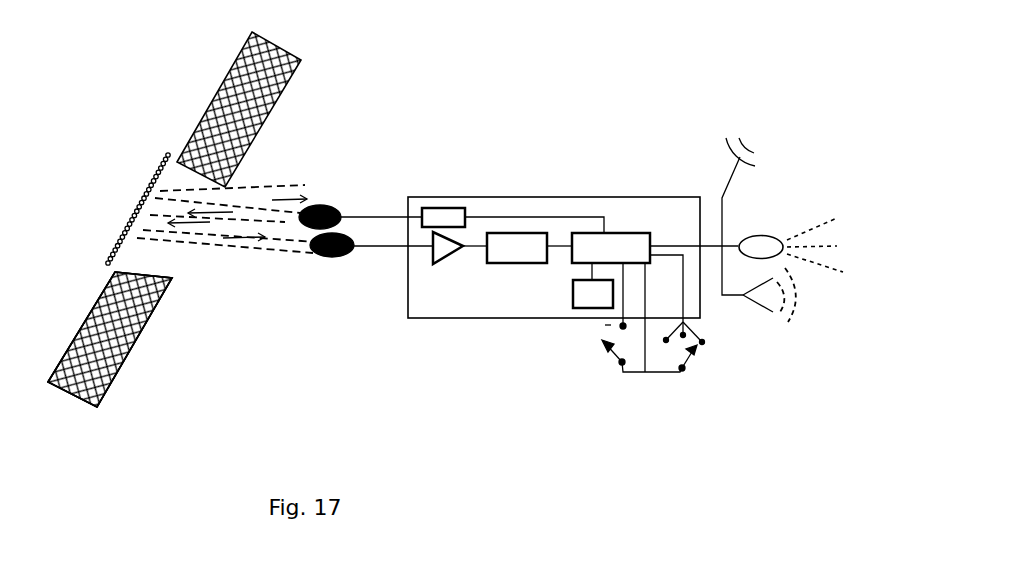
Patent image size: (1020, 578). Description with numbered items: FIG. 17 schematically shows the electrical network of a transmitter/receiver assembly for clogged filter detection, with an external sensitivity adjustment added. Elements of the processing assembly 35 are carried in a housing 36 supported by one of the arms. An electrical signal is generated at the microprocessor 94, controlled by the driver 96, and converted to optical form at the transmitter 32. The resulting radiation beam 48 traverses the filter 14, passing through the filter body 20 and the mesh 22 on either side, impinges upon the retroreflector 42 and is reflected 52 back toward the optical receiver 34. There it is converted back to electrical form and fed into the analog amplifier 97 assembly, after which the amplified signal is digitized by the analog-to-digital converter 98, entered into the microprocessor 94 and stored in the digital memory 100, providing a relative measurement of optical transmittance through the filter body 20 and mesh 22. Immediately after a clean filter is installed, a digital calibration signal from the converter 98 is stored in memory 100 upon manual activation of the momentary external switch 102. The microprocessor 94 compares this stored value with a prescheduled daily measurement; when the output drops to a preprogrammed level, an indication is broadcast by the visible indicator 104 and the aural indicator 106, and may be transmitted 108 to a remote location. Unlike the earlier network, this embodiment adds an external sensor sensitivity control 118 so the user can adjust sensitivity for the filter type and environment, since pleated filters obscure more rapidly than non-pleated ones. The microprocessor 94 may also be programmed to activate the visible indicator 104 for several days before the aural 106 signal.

The filter 14 is at (145, 320).
The filter body 20 is at (118, 328).
The mesh 22 is at (115, 377).
The retroreflector 42 is at (155, 167).
The radiation beam 48 is at (238, 223).
The reflected beam 52 is at (270, 190).
The transmitter 32 is at (322, 203).
The optical receiver 34 is at (330, 257).
The housing 36 is at (500, 197).
The processing assembly 35 is at (545, 207).
The driver 96 is at (438, 208).
The analog amplifier 97 is at (445, 265).
The analog-to-digital converter 98 is at (517, 265).
The microprocessor 94 is at (612, 233).
The digital memory 100 is at (572, 292).
The momentary external switch 102 is at (610, 357).
The external sensor sensitivity control 118 is at (673, 380).
The aural indicator 106 is at (757, 303).
The visible indicator 104 is at (755, 232).
The remote transmission 108 is at (748, 143).